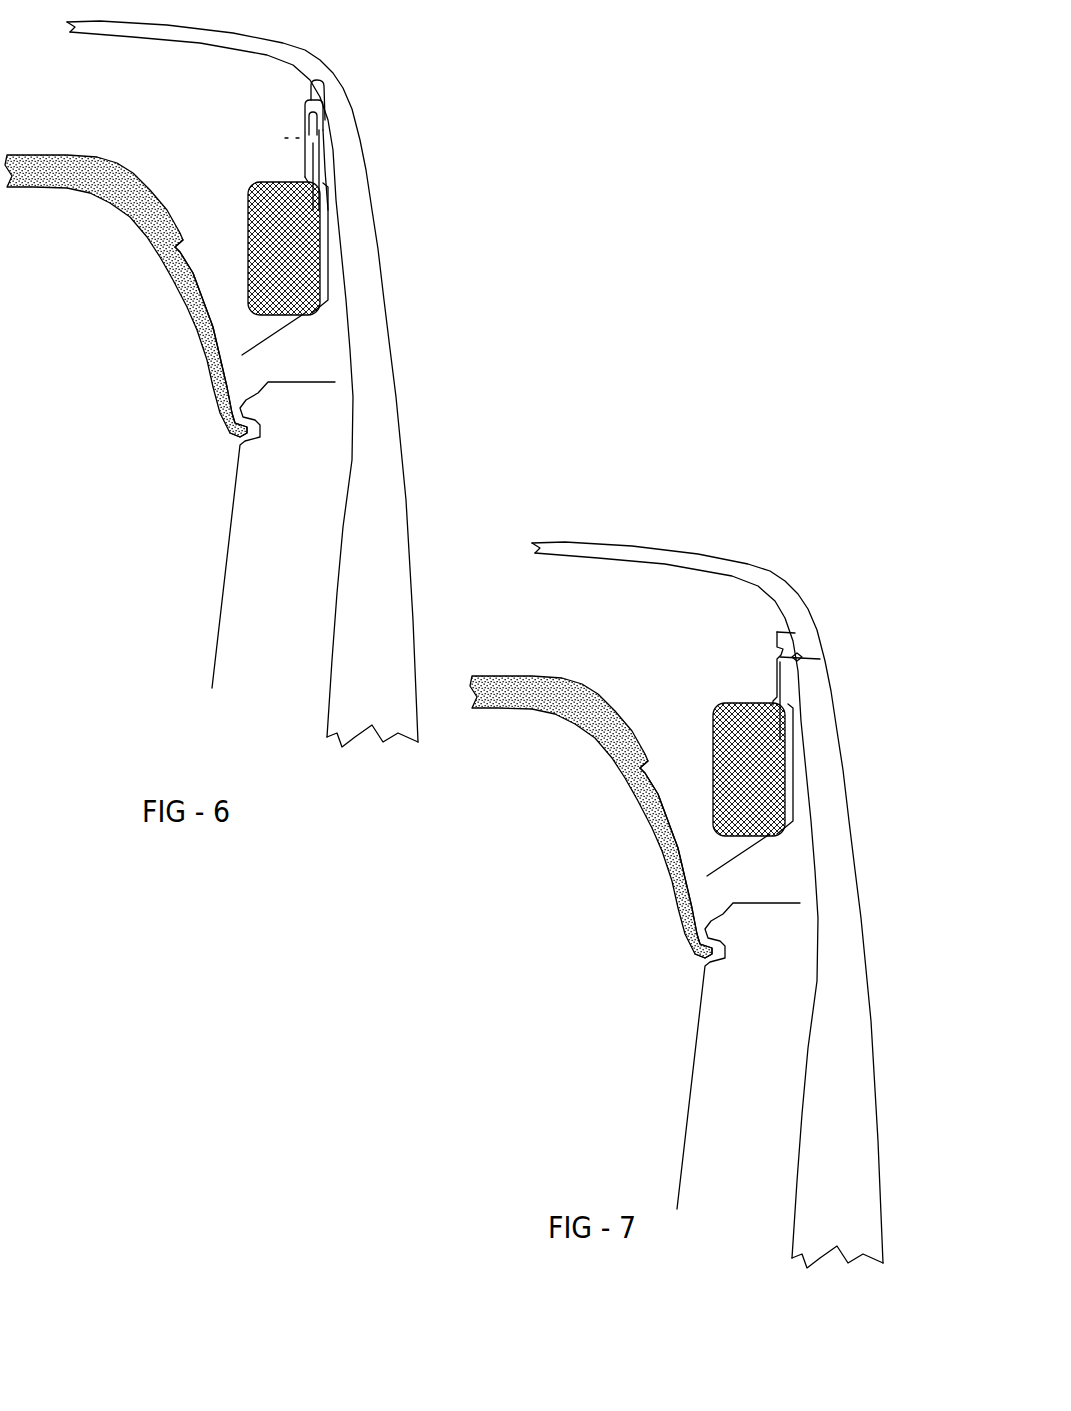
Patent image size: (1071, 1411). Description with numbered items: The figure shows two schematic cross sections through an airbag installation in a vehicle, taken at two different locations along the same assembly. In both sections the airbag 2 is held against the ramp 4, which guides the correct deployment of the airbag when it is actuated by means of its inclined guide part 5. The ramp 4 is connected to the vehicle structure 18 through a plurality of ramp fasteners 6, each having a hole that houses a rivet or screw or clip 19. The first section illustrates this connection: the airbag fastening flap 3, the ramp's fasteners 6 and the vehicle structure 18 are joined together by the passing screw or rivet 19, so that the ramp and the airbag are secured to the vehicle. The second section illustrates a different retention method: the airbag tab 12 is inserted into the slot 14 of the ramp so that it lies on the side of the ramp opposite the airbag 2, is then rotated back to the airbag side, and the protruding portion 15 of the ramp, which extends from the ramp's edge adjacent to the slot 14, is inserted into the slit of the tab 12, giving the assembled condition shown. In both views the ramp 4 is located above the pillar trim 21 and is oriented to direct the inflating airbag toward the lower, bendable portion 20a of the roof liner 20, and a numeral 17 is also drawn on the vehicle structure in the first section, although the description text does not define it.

In FIG. 6, the airbag 2 is at (320, 233).
In FIG. 7, the airbag 2 is at (790, 767).
In FIG. 6, the airbag fastening flap 3 is at (339, 78).
In FIG. 6, the ramp 4 is at (323, 187).
In FIG. 6, the inclined guide part 5 is at (307, 317).
In FIG. 7, the inclined guide part 5 is at (752, 850).
In FIG. 6, the ramp fasteners 6 is at (307, 122).
In FIG. 7, the tab 12 is at (780, 647).
In FIG. 7, the slot 14 is at (802, 658).
In FIG. 7, the protruding portion 15 is at (800, 632).
In FIG. 6, the mounting flange 17 is at (327, 125).
In FIG. 6, the vehicle structure 18 is at (377, 317).
In FIG. 7, the vehicle structure 18 is at (837, 968).
In FIG. 6, the rivet or screw or clip 19 is at (338, 131).
In FIG. 6, the roof liner 20 is at (63, 190).
In FIG. 7, the roof liner 20 is at (513, 707).
In FIG. 6, the bendable portion 20a is at (187, 303).
In FIG. 7, the bendable portion 20a is at (660, 838).
In FIG. 6, the pillar trim 21 is at (223, 540).
In FIG. 7, the pillar trim 21 is at (693, 1048).